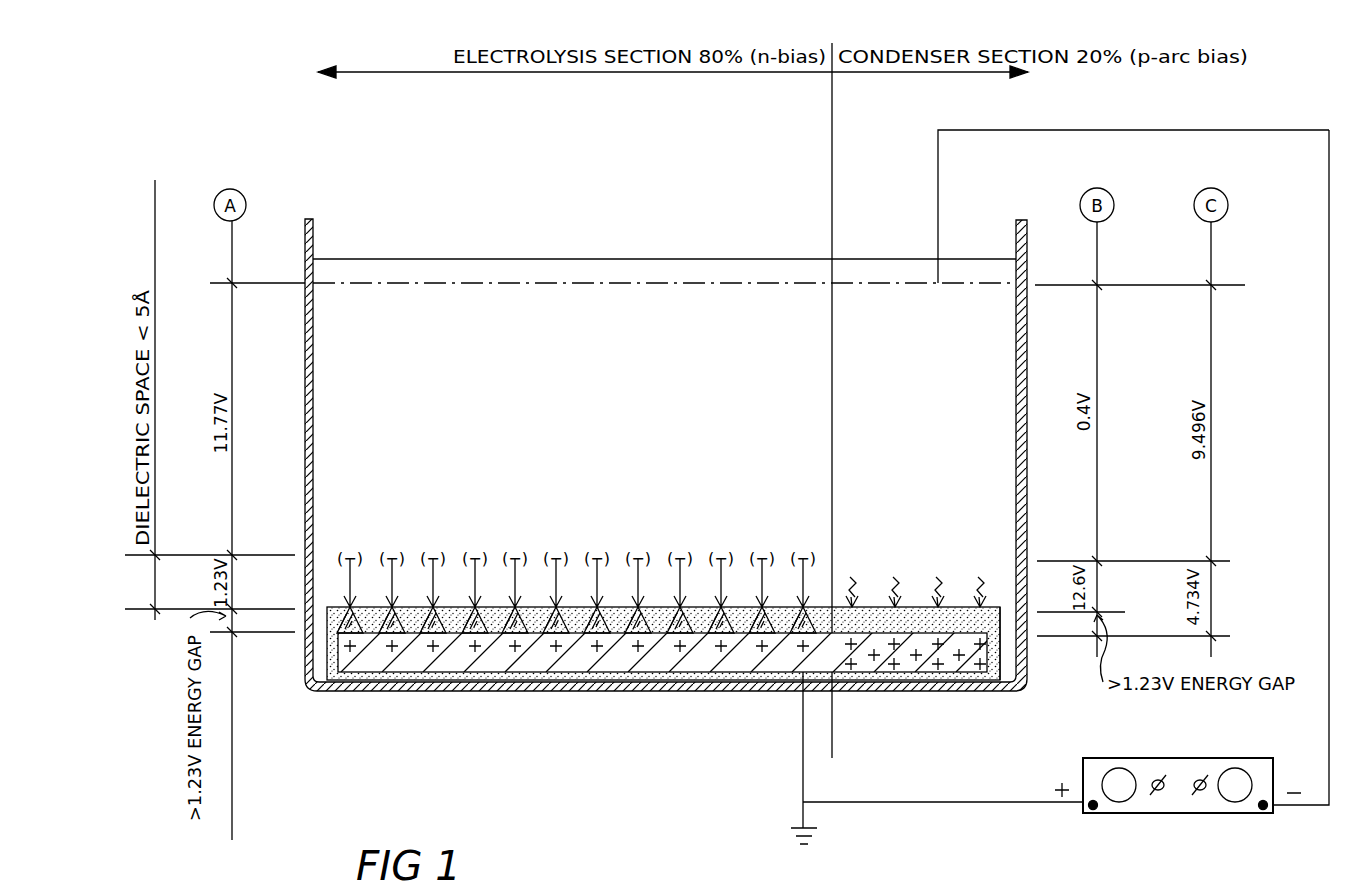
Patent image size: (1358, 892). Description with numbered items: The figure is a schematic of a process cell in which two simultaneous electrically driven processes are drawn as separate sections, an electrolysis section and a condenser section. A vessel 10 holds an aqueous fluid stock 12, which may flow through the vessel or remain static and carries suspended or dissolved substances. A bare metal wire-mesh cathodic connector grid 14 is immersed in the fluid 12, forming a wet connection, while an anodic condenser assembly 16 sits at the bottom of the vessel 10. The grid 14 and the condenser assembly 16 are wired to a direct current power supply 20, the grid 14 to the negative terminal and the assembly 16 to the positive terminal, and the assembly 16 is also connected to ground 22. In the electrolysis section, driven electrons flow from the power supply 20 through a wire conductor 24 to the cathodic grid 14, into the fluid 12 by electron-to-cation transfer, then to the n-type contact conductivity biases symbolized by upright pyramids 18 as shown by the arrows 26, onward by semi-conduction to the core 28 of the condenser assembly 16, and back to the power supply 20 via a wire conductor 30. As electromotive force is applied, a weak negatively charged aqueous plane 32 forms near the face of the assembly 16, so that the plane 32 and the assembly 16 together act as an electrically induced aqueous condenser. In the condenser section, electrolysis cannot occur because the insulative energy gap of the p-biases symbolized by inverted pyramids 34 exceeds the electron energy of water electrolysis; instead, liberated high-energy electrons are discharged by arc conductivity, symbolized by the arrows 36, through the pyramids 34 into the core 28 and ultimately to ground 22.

The vessel 10 is at (313, 236).
The aqueous fluid stock 12 is at (415, 265).
The cathodic connector grid 14 is at (476, 290).
The anodic condenser assembly 16 is at (330, 660).
The n-type contact conductivity biases 18 is at (432, 622).
The direct current power supply 20 is at (1218, 758).
The ground 22 is at (797, 827).
The wire conductor 24 is at (1329, 612).
The arrows 26 is at (516, 581).
The core 28 is at (484, 658).
The wire conductor 30 is at (905, 802).
The negatively charged aqueous plane 32 is at (556, 566).
The p-biases 34 is at (982, 618).
The arrows 36 is at (940, 584).